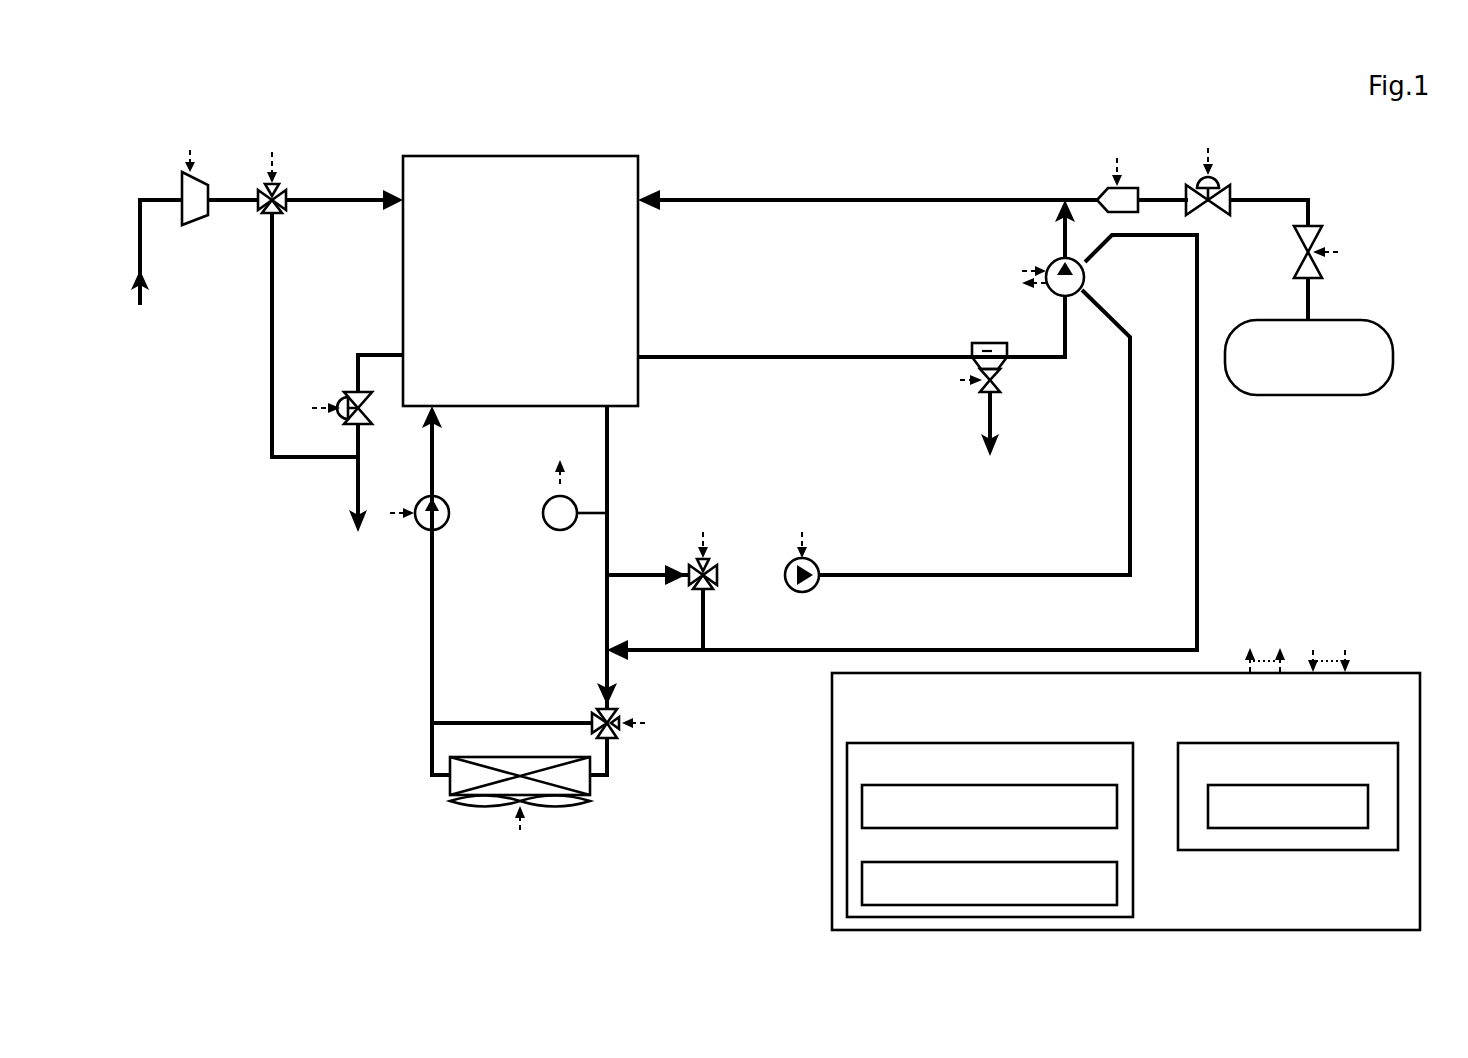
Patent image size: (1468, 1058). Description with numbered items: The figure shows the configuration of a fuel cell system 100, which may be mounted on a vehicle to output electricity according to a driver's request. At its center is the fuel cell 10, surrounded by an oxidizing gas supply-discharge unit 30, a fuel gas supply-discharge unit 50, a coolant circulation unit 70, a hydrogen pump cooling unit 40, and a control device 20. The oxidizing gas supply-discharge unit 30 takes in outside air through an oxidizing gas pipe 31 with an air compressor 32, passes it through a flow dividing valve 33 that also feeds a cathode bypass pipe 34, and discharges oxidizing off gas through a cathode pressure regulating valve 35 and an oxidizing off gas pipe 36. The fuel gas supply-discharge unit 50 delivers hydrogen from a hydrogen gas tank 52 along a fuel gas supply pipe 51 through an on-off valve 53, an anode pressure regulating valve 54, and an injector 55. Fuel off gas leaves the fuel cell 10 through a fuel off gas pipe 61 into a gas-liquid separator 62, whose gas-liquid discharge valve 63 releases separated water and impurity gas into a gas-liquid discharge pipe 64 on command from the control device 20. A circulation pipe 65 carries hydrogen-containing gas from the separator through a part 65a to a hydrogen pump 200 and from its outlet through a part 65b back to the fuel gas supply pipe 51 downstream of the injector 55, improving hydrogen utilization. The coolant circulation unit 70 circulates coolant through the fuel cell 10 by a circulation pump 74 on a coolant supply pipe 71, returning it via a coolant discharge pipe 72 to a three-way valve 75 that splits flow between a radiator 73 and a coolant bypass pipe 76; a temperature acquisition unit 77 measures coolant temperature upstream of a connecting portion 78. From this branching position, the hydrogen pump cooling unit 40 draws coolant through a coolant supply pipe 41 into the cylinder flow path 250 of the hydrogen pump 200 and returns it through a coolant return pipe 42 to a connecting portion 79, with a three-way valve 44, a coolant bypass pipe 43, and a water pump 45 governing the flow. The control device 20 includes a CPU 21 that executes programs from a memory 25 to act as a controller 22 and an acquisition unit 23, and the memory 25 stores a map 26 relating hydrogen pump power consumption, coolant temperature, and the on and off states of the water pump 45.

The fuel cell system 100 is at (155, 127).
The fuel cell 10 is at (521, 156).
The control device 20 is at (1385, 673).
The central processing unit (CPU) 21 is at (1098, 743).
The controller 22 is at (1070, 785).
The acquisition unit 23 is at (1070, 862).
The memory 25 is at (1360, 743).
The map 26 is at (1328, 785).
The oxidizing gas supply-discharge unit 30 is at (193, 373).
The oxidizing gas pipe 31 is at (142, 248).
The air compressor 32 is at (203, 183).
The flow dividing valve 33 is at (283, 195).
The cathode bypass pipe 34 is at (270, 308).
The cathode pressure regulating valve 35 is at (333, 423).
The oxidizing off gas pipe 36 is at (356, 481).
The hydrogen pump cooling unit 40 is at (778, 668).
The coolant supply pipe 41 is at (1128, 520).
The coolant return pipe 42 is at (1199, 510).
The coolant bypass pipe 43 is at (705, 628).
The three-way valve 44 is at (720, 570).
The water pump 45 is at (822, 566).
The fuel gas supply-discharge unit 50 is at (1313, 153).
The fuel gas supply pipe 51 is at (1310, 213).
The hydrogen gas tank 52 is at (1320, 320).
The on-off valve 53 is at (1295, 256).
The anode pressure regulating valve 54 is at (1232, 190).
The injector 55 is at (1131, 186).
The fuel off gas pipe 61 is at (812, 355).
The gas-liquid separator 62 is at (1002, 365).
The gas-liquid discharge valve 63 is at (998, 388).
The gas-liquid discharge pipe 64 is at (987, 416).
The circulation pipe 65 is at (994, 328).
The part of circulation pipe 65a is at (1063, 322).
The part of circulation pipe 65b is at (1063, 239).
The coolant circulation unit 70 is at (380, 763).
The coolant supply pipe 71 is at (430, 654).
The coolant discharge pipe 72 is at (609, 430).
The radiator 73 is at (590, 792).
The circulation pump 74 is at (420, 530).
The three-way valve 75 is at (598, 712).
The coolant bypass pipe 76 is at (487, 722).
The temperature acquisition unit 77 is at (546, 505).
The connecting portion (branching position) 78 is at (605, 578).
The connecting portion (joining position) 79 is at (606, 649).
The hydrogen pump 200 is at (1090, 300).
The cylinder flow path 250 is at (1087, 282).